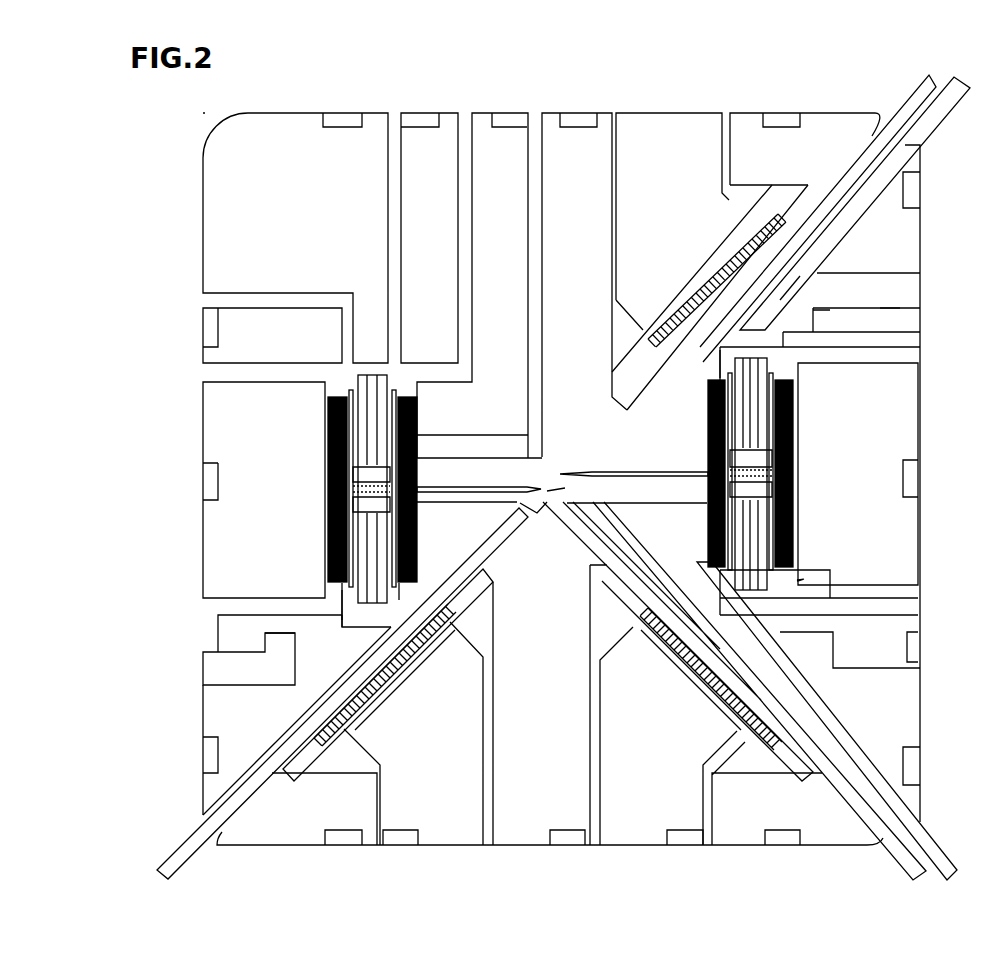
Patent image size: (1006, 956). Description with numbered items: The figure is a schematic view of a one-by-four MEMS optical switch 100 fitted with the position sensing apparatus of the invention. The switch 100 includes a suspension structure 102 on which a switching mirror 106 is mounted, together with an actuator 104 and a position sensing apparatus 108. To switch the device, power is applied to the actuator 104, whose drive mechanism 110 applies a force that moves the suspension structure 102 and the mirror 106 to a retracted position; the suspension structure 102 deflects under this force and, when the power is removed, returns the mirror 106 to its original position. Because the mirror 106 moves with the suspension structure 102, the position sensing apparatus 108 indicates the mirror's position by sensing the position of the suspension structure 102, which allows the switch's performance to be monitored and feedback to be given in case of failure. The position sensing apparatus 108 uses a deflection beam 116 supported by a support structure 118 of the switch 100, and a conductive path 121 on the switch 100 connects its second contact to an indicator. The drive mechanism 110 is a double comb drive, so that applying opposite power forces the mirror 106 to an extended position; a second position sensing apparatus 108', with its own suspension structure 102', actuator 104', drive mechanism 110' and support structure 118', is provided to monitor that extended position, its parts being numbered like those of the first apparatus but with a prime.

The MEMS optical switch 100 is at (606, 66).
The suspension structure 102 is at (579, 513).
The suspension structure 102' is at (604, 520).
The actuator 104 is at (601, 443).
The actuator 104' is at (425, 413).
The switching mirror 106 is at (571, 476).
The position sensing apparatus 108 is at (503, 516).
The position sensing apparatus 108' is at (547, 547).
The drive mechanism 110 is at (587, 489).
The drive mechanism 110' is at (560, 597).
The deflection beam 116 is at (344, 627).
The support structure 118 is at (578, 511).
The support structure 118' is at (833, 267).
The conductive path 121 is at (887, 307).